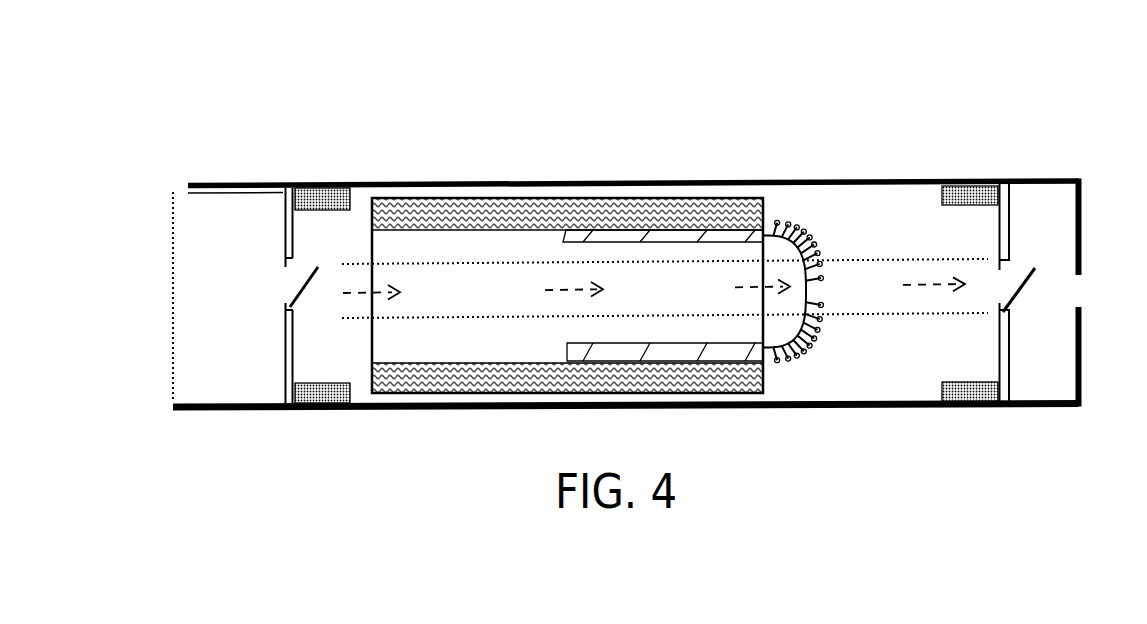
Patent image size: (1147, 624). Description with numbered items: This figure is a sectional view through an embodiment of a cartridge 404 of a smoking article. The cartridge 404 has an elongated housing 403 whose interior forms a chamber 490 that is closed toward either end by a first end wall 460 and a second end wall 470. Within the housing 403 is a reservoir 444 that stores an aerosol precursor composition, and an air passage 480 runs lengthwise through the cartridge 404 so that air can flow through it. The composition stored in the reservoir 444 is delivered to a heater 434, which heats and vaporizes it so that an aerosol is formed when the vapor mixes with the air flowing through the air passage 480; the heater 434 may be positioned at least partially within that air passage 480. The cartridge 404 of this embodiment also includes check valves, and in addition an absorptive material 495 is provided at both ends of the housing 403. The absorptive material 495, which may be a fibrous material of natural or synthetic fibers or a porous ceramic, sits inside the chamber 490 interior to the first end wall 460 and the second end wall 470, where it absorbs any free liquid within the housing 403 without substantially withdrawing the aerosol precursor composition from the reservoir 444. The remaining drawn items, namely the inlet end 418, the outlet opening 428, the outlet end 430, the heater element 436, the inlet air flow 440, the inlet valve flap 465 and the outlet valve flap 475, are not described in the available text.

The housing 403 is at (743, 183).
The cartridge 404 is at (228, 37).
The inlet end 418 is at (183, 182).
The outlet opening 428 is at (1080, 293).
The outlet end 430 is at (1105, 188).
The heater 434 is at (813, 225).
The heater element 436 is at (673, 236).
The inlet air flow 440 is at (197, 280).
The reservoir 444 is at (560, 198).
The first end wall 460 is at (295, 238).
The inlet valve flap 465 is at (285, 280).
The second end wall 470 is at (997, 232).
The outlet valve flap 475 is at (1013, 267).
The air passage 480 is at (882, 267).
The chamber 490 is at (867, 350).
The absorptive material 495 is at (313, 397).